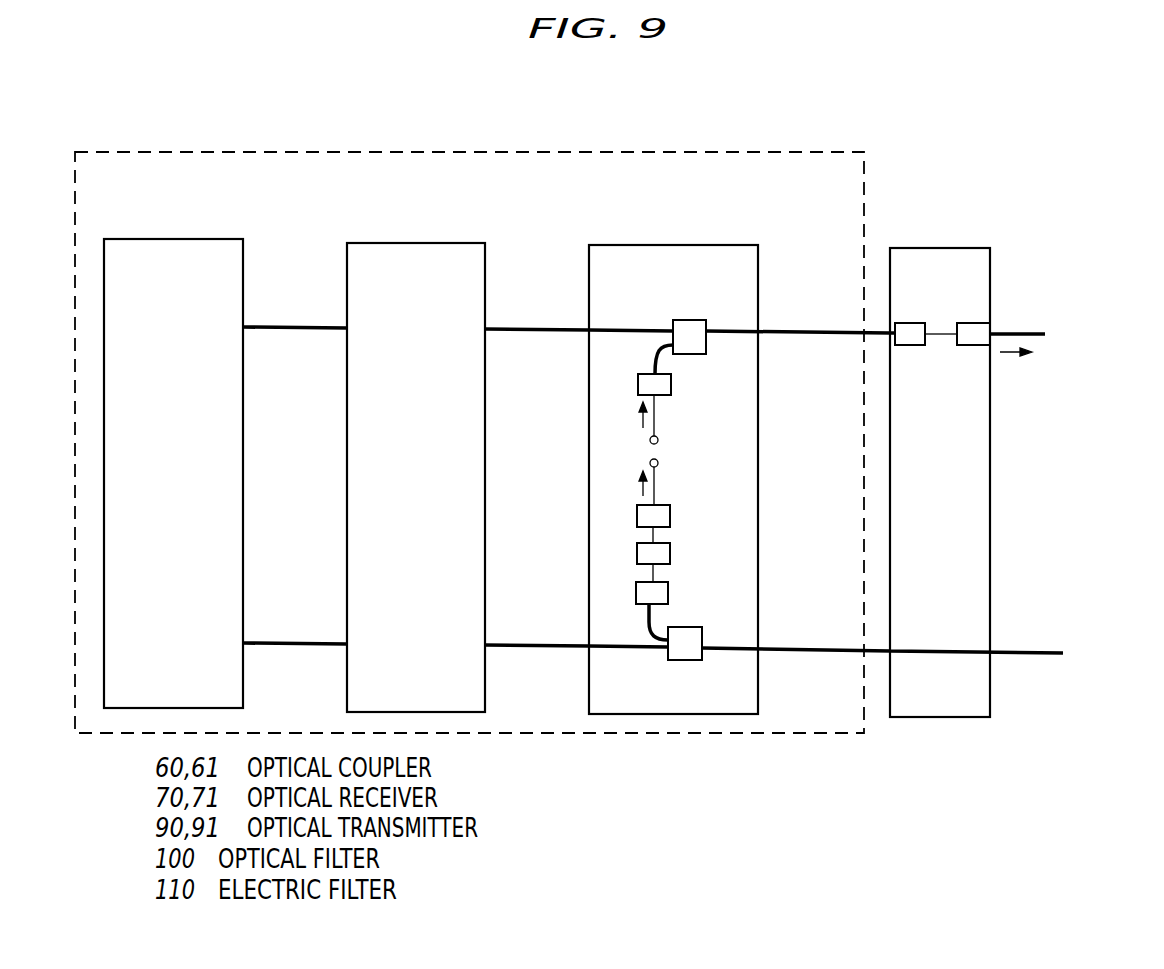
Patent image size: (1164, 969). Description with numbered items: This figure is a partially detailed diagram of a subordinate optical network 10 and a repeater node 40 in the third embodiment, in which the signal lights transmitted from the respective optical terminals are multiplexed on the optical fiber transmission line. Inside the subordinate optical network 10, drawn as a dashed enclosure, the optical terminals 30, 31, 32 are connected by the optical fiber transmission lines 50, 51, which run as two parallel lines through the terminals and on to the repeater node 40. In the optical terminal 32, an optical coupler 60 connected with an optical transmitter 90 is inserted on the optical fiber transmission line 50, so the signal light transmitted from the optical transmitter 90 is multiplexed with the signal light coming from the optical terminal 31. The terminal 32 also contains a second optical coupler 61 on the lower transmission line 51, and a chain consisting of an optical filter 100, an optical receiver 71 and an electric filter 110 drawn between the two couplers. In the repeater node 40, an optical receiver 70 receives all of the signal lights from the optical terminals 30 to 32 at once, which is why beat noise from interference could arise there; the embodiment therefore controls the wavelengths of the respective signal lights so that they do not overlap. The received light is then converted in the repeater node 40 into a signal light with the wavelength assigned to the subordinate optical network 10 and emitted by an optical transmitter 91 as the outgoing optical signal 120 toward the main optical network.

The subordinate optical network 10 is at (449, 152).
The optical terminal 30 is at (108, 239).
The optical terminal 31 is at (355, 243).
The optical terminal 32 is at (618, 245).
The repeater node 40 is at (910, 248).
The optical fiber transmission line 50 is at (299, 327).
The optical fiber transmission line 51 is at (301, 647).
The optical coupler 60 is at (685, 320).
The optical coupler 61 is at (685, 660).
The optical receiver 70 is at (908, 323).
The optical receiver 71 is at (670, 550).
The optical transmitter 90 is at (671, 384).
The optical transmitter 91 is at (966, 323).
The optical filter 100 is at (668, 592).
The electric filter 110 is at (670, 511).
The optical signal 120 is at (1020, 352).